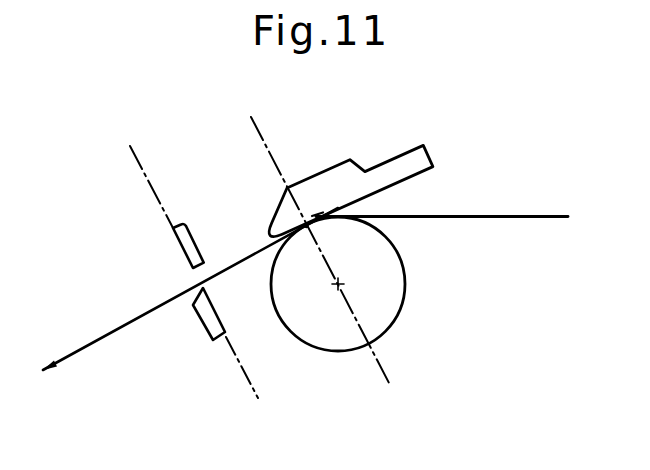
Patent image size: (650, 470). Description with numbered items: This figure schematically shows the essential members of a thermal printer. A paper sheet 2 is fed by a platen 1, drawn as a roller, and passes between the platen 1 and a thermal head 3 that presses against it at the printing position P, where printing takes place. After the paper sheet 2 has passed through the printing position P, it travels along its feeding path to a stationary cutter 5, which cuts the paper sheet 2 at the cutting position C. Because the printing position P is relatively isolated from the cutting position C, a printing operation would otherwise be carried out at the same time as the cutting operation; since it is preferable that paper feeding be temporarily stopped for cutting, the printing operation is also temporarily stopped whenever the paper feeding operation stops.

The platen 1 is at (405, 302).
The paper sheet 2 is at (530, 215).
The thermal head 3 is at (351, 162).
The stationary cutter 5 is at (187, 226).
The cutting position C is at (207, 290).
The printing position P is at (317, 233).